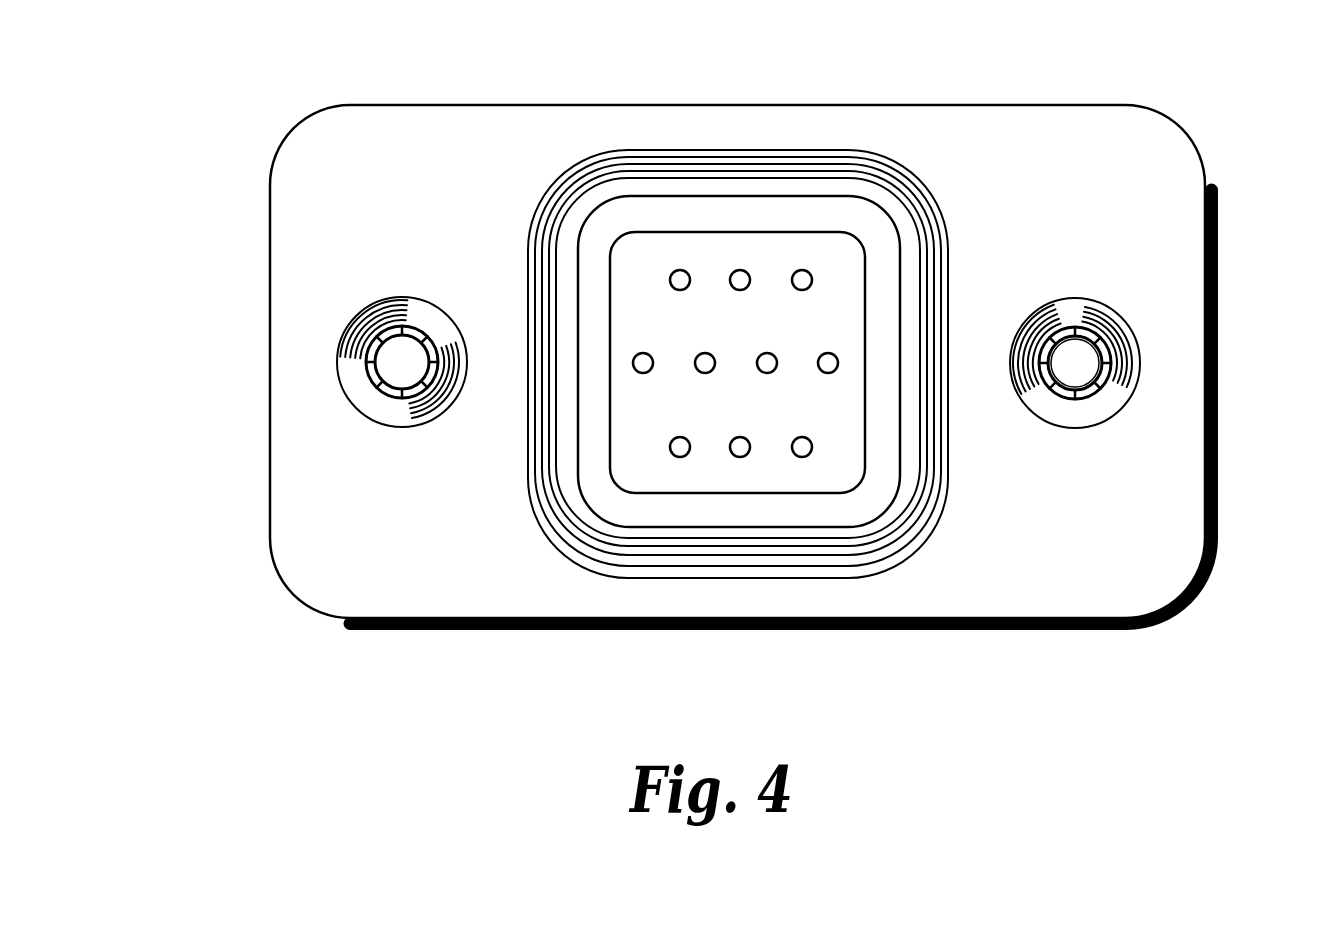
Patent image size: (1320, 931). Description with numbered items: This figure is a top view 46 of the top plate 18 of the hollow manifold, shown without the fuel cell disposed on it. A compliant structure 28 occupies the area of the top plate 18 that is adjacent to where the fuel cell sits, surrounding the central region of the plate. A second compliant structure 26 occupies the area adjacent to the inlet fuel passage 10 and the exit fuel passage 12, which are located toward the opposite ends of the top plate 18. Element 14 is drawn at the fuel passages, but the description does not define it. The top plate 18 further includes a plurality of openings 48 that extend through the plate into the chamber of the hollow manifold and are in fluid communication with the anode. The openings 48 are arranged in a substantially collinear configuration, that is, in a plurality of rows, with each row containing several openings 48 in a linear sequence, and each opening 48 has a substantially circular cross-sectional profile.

The top view 46 is at (707, 336).
The top plate 18 is at (1168, 227).
The compliant structure 28 is at (560, 205).
The inlet fuel passage 10 is at (360, 396).
The exit fuel passage 12 is at (1080, 352).
The nut 14 is at (370, 351).
The compliant structure 26 is at (1137, 401).
The opening 48 is at (645, 360).